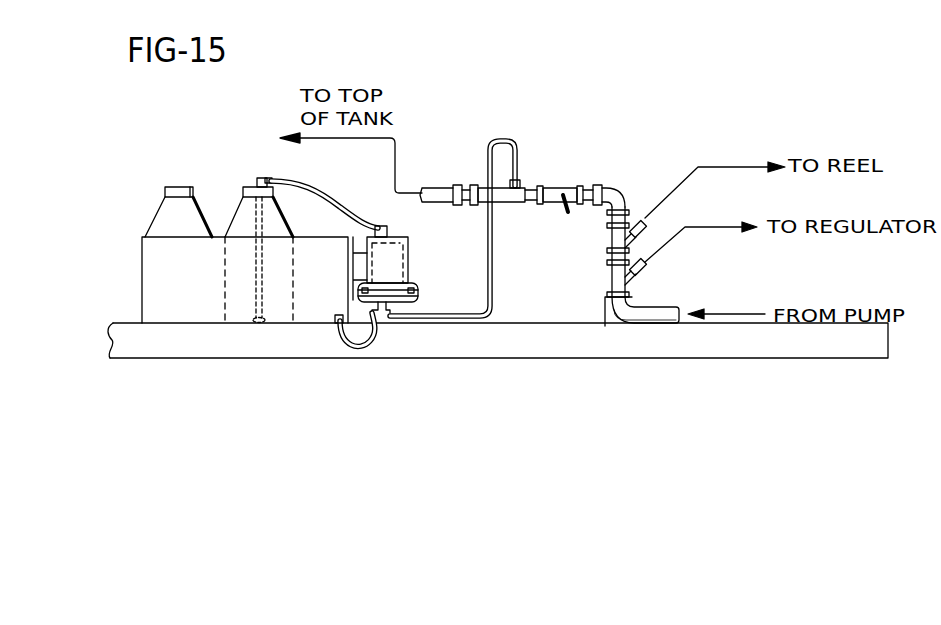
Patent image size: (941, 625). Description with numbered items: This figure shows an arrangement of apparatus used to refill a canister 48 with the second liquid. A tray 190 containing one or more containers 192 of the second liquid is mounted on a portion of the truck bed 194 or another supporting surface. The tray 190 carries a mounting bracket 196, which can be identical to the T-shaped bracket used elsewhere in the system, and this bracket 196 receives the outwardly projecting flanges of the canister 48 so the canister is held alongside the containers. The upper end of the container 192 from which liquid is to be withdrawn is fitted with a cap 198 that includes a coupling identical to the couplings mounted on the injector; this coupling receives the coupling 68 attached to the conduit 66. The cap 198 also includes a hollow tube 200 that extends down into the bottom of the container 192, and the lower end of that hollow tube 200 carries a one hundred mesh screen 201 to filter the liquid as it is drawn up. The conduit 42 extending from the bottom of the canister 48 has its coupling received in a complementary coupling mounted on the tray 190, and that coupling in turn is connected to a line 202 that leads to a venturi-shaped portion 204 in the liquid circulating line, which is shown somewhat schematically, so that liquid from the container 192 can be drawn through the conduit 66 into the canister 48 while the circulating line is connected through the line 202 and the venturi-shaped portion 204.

The conduit 42 is at (383, 344).
The canister 48 is at (409, 256).
The conduit 66 is at (330, 204).
The coupling 68 is at (262, 176).
The tray 190 is at (207, 311).
The container 192 is at (196, 198).
The truck bed 194 is at (533, 352).
The mounting bracket 196 is at (357, 268).
The cap 198 is at (243, 200).
The hollow tube 200 is at (252, 267).
The screen 201 is at (284, 323).
The line 202 is at (492, 285).
The venturi-shaped portion 204 is at (513, 206).